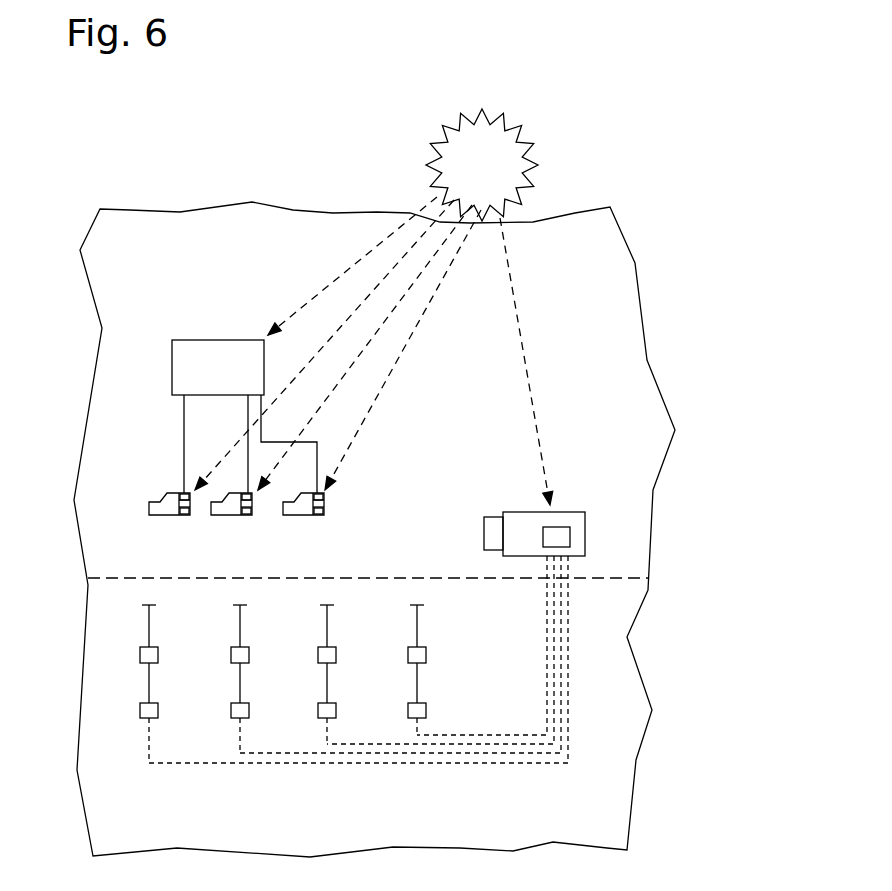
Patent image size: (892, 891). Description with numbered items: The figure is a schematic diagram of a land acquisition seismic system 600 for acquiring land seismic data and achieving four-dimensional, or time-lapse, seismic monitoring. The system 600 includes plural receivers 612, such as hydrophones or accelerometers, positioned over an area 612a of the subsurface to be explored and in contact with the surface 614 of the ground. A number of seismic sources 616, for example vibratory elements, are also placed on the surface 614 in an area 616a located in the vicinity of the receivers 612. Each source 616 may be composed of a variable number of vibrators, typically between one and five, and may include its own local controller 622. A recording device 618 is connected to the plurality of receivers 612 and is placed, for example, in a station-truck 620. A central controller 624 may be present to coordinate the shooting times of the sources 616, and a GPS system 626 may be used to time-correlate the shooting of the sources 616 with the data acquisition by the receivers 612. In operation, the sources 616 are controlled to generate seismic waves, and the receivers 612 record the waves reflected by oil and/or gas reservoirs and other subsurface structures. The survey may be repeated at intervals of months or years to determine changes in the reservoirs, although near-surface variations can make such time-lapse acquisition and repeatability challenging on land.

The system 600 is at (310, 150).
The receivers 612 is at (408, 711).
The area 612a is at (617, 755).
The surface 614 is at (72, 527).
The seismic sources 616 is at (168, 508).
The area 616a is at (637, 385).
The recording device 618 is at (560, 538).
The station-truck 620 is at (577, 505).
The local controller 622 is at (185, 517).
The central controller 624 is at (192, 340).
The GPS system 626 is at (510, 132).